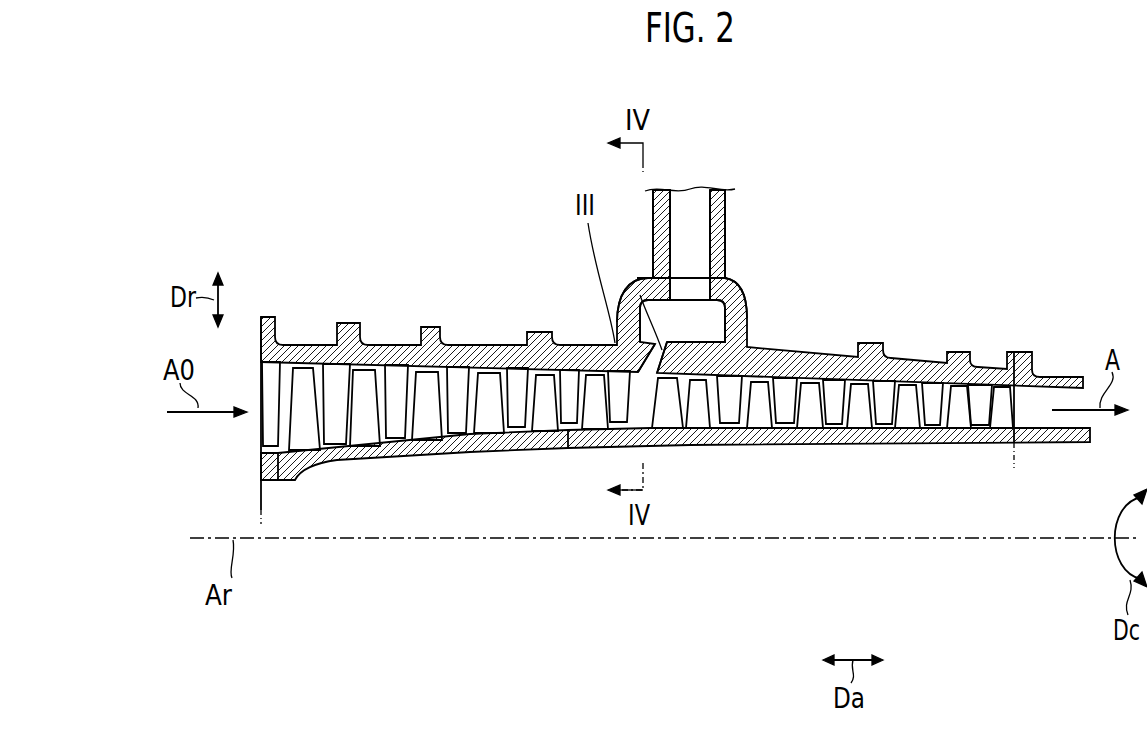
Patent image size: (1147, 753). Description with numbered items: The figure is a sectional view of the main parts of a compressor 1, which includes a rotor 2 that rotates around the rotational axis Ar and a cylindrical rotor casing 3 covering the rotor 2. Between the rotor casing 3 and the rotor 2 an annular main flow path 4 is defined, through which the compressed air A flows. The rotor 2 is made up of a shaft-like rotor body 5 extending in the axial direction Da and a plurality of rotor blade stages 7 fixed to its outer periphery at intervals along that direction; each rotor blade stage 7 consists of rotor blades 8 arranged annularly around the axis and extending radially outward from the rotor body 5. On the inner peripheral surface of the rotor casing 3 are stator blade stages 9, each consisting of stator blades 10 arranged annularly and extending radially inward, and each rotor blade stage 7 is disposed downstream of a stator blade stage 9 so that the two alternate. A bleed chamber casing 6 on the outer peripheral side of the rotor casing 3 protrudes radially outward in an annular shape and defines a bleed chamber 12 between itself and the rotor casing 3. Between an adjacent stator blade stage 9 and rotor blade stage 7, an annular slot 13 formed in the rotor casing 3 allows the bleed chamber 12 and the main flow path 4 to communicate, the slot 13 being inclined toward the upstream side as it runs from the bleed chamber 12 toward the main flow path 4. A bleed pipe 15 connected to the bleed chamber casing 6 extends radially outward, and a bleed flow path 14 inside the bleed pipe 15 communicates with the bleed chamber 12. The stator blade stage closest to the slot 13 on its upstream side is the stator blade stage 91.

The compressor 1 is at (1049, 281).
The rotor 2 is at (259, 467).
The rotor casing 3 is at (873, 342).
The main flow path 4 is at (318, 378).
The rotor body 5 is at (900, 445).
The bleed chamber casing 6 is at (734, 293).
The rotor blade stage 7 is at (428, 430).
The rotor blade 8 is at (547, 406).
The stator blade stage 9 is at (397, 377).
The stator blade 10 is at (336, 404).
The bleed chamber 12 is at (716, 318).
The slot 13 is at (635, 368).
The bleed flow path 14 is at (683, 232).
The bleed pipe 15 is at (722, 246).
The stator blade stage 91 is at (617, 382).